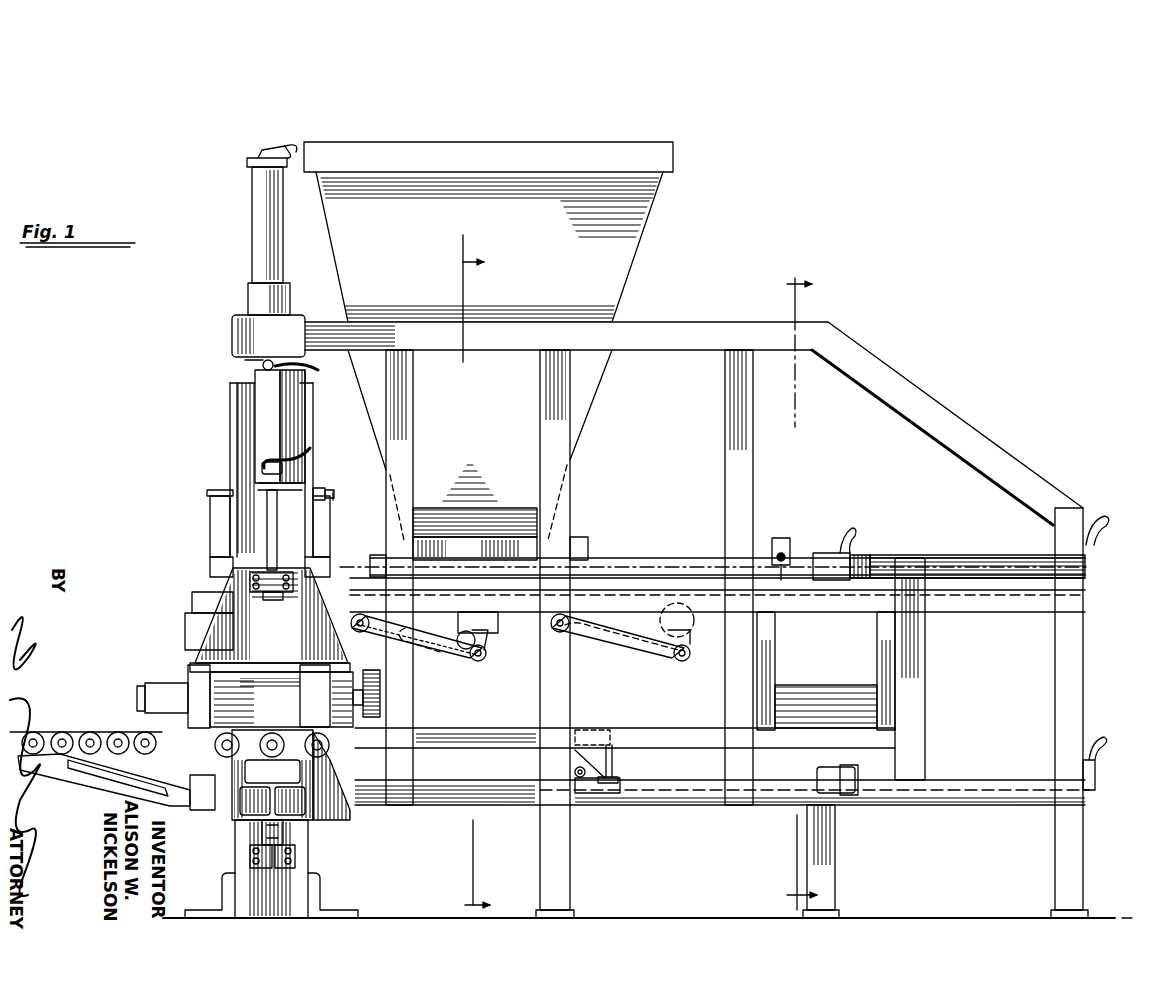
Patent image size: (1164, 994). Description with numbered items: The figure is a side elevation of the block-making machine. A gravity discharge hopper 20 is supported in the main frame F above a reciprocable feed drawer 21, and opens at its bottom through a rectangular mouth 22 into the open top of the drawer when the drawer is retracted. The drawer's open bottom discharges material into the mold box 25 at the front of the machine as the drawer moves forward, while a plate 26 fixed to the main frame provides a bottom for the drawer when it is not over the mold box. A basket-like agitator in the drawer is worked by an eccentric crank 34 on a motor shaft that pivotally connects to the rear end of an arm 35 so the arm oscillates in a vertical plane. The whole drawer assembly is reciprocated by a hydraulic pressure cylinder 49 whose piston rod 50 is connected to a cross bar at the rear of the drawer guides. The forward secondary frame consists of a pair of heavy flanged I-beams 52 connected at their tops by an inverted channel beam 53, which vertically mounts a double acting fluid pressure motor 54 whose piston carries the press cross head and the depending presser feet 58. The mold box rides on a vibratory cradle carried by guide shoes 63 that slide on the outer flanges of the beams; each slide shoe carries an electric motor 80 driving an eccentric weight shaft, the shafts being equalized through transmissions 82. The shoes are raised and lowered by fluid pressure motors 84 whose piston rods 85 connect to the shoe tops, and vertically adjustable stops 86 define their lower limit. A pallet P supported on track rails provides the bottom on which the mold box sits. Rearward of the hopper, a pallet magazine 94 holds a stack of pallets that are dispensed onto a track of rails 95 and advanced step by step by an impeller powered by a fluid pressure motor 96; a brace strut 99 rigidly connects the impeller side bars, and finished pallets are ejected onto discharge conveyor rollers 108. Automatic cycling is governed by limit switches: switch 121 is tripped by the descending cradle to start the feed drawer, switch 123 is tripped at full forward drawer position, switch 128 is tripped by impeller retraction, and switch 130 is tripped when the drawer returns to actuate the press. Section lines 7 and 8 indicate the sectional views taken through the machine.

The gravity discharge hopper 20 is at (618, 278).
The feed drawer 21 is at (176, 598).
The rectangular mouth 22 is at (482, 540).
The mold box 25 is at (200, 622).
The plate 26 is at (496, 672).
The eccentric crank 34 is at (690, 648).
The arm 35 is at (436, 654).
The hydraulic pressure cylinder 49 is at (972, 545).
The piston rod 50 is at (804, 553).
The I-beams 52 is at (290, 485).
The inverted channel beam 53 is at (232, 352).
The fluid pressure motor 54 is at (262, 256).
The presser feet 58 is at (218, 518).
The guide shoes 63 is at (292, 641).
The electric motor 80 is at (283, 693).
The transmissions 82 is at (162, 688).
The fluid pressure motors 84 is at (268, 400).
The piston rod 85 is at (268, 550).
The vertically adjustable stops 86 is at (290, 833).
The pallet magazine 94 is at (800, 668).
The rails 95 is at (672, 730).
The fluid pressure motor 96 is at (938, 768).
The brace strut 99 is at (614, 770).
The discharge conveyor rollers 108 is at (110, 732).
The limit switch 121 is at (320, 490).
The limit switch 123 is at (585, 555).
The limit switch 128 is at (590, 792).
The limit switch 130 is at (772, 542).
The section line 7 is at (468, 580).
The section line 8 is at (796, 590).
The main frame F is at (700, 330).
The pallet P is at (842, 688).